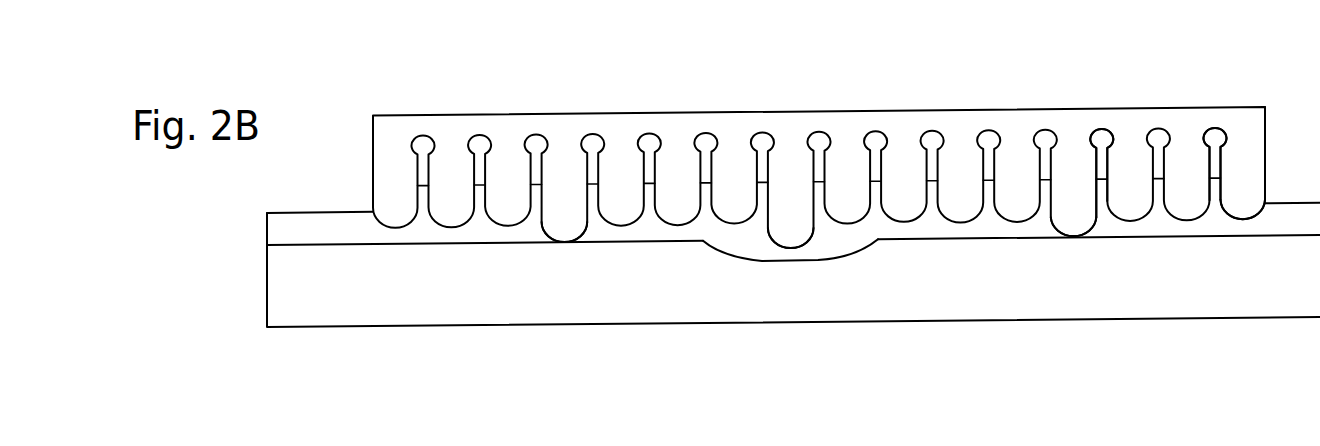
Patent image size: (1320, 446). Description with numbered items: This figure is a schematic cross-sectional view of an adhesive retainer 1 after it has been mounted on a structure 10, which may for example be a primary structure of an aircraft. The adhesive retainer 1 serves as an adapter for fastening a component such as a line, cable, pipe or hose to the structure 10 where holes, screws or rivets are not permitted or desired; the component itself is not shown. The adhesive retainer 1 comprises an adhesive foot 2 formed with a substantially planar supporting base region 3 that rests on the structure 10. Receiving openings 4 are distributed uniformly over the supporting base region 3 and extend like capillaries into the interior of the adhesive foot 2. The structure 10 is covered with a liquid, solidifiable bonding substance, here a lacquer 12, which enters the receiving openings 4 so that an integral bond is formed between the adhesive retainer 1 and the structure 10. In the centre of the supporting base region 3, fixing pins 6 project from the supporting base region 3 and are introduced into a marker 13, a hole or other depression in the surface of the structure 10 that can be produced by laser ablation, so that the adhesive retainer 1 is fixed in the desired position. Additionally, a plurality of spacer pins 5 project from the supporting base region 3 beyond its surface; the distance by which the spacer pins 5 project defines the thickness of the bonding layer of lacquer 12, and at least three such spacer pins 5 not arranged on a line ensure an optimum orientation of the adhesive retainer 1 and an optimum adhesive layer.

The adhesive retainer 1 is at (697, 79).
The adhesive foot 2 is at (846, 119).
The supporting base region 3 is at (1247, 187).
The receiving openings 4 is at (1102, 212).
The spacer pins 5 is at (563, 230).
The fixing pins 6 is at (790, 238).
The structure 10 is at (282, 293).
The lacquer 12 is at (305, 223).
The marker 13 is at (825, 244).